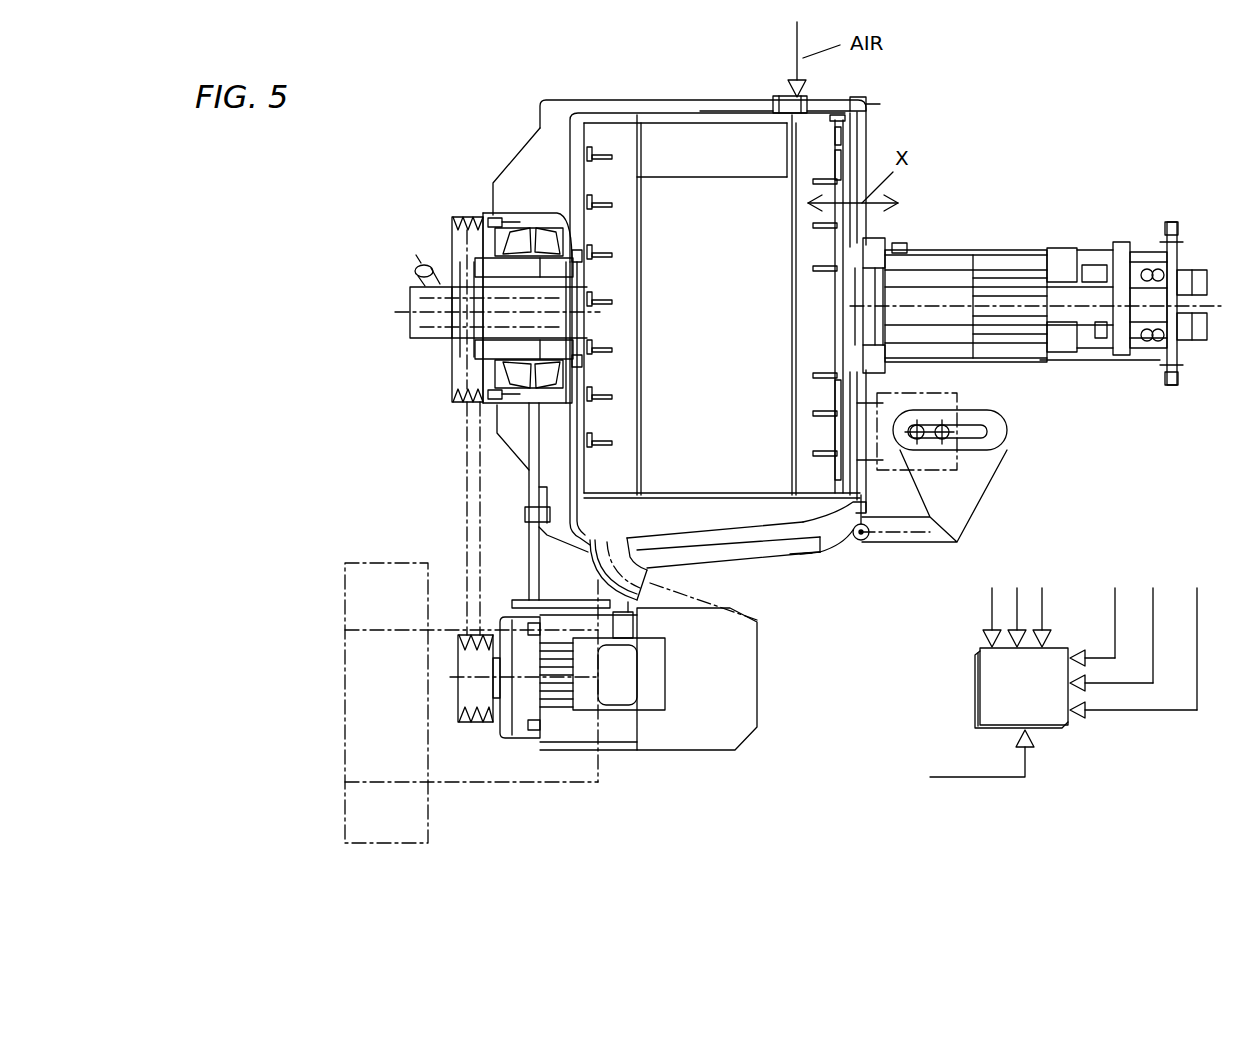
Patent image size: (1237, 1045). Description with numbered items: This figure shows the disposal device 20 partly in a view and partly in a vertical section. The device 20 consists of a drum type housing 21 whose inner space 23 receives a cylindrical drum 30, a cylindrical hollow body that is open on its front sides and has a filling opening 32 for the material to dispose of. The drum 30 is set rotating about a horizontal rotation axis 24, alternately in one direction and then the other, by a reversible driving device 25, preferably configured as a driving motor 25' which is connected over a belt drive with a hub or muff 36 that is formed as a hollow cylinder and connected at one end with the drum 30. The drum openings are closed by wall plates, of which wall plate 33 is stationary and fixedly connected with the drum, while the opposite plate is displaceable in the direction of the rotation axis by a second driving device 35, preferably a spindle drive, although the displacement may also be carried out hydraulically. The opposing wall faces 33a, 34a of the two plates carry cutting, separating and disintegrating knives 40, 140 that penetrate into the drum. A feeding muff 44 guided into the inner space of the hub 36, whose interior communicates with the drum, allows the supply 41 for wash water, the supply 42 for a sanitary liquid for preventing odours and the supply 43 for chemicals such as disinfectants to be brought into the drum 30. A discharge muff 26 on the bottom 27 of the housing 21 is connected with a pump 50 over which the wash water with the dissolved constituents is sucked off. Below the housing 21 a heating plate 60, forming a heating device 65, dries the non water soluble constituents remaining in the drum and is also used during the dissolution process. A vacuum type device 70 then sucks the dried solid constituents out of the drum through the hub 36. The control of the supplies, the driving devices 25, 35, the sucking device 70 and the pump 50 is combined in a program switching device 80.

The device 20 is at (962, 174).
The drum type housing 21 is at (870, 138).
The inner space 23 is at (815, 503).
The horizontal rotation axis 24 is at (402, 320).
The driving device 25 is at (789, 678).
The driving motor 25' is at (564, 736).
The discharge muff 26 is at (647, 580).
The bottom 27 is at (745, 517).
The cylindrical drum 30 is at (824, 112).
The filling opening 32 is at (712, 150).
The wall plate 33 is at (585, 175).
The wall face 33a is at (596, 232).
The wall face 34a is at (836, 248).
The driving device 35 is at (1024, 240).
The muff 36 is at (437, 345).
The cutting, separating and disintegrating knives 40 is at (604, 153).
The supply for wash water 41 is at (992, 603).
The supply for a sanitary liquid 42 is at (1017, 603).
The supply for chemicals 43 is at (1042, 603).
The feeding muff 44 is at (417, 276).
The pump 50 is at (963, 759).
The heating plate 60 is at (807, 555).
The heating device 65 is at (806, 553).
The vacuum type device 70 is at (1140, 638).
The program switching device 80 is at (1021, 688).
The cutting, separating and disintegrating knives 140 is at (813, 374).